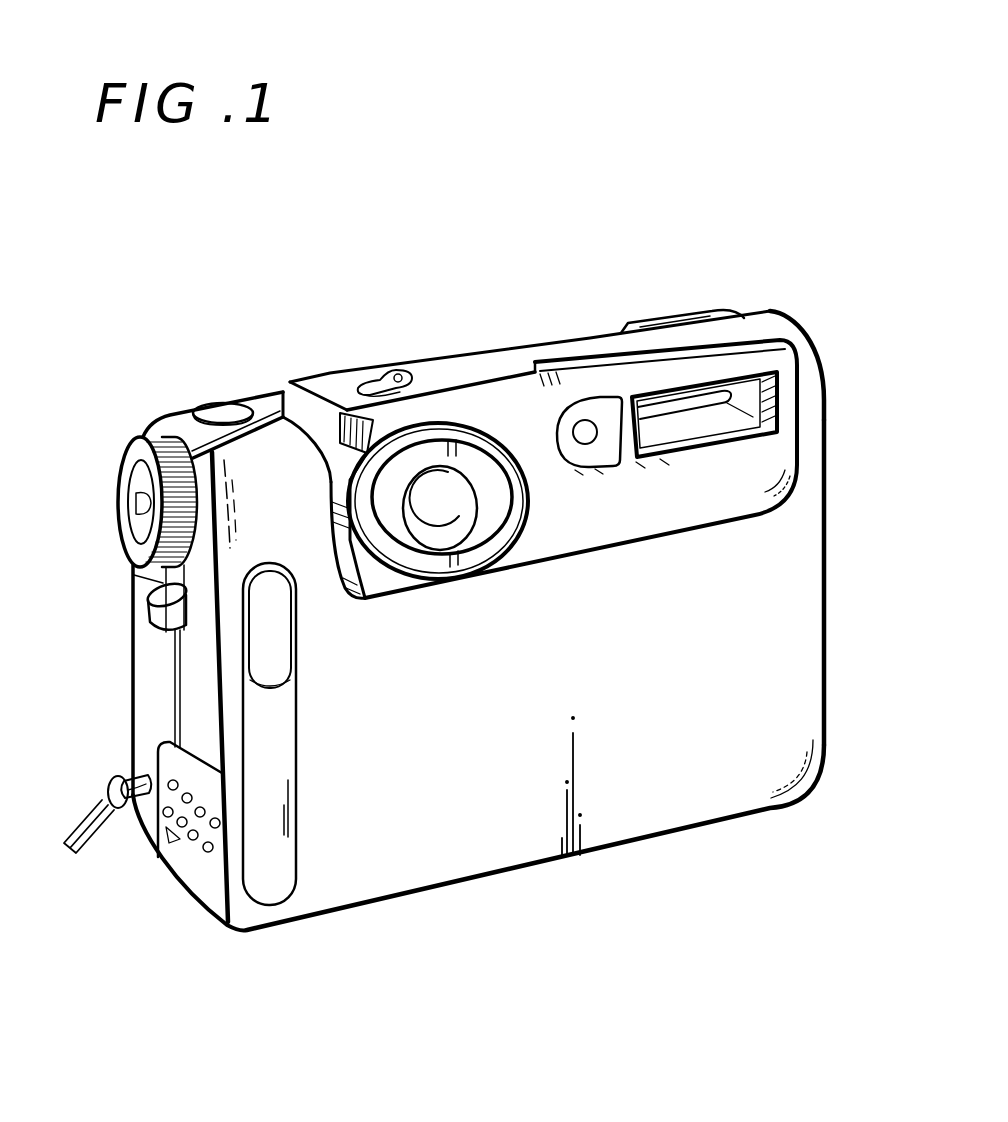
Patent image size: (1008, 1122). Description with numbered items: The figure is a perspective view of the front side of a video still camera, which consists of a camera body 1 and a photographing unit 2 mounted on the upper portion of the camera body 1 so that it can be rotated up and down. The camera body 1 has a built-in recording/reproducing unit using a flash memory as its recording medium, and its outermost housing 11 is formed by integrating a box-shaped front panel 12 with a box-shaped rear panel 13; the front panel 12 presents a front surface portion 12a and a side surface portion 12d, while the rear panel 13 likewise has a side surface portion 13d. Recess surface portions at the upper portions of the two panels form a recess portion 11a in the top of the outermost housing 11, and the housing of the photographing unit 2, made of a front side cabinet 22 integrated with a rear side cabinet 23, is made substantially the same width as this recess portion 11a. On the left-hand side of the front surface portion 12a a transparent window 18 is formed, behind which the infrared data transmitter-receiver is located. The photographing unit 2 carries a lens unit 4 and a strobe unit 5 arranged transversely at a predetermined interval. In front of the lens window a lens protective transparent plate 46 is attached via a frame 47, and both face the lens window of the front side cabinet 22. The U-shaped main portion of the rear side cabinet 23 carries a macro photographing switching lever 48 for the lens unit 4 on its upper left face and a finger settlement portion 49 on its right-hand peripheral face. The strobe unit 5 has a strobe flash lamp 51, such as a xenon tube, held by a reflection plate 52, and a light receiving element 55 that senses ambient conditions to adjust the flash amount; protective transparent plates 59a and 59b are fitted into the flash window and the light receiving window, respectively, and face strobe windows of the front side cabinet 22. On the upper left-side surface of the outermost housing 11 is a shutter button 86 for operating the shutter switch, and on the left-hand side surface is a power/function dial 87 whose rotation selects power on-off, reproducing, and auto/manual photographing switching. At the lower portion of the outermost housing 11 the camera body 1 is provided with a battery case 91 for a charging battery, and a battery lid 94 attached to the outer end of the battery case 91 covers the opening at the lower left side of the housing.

The camera body 1 is at (835, 560).
The photographing unit 2 is at (562, 322).
The lens unit 4 is at (472, 530).
The strobe unit 5 is at (716, 452).
The outermost housing 11 is at (827, 486).
The recess portion 11a is at (333, 385).
The front panel 12 is at (824, 665).
The front surface portion 12a is at (782, 744).
The side surface portion 12d is at (208, 673).
The rear panel 13 is at (132, 648).
The side surface portion 13d is at (153, 672).
The transparent window 18 is at (284, 617).
The front side cabinet 22 is at (545, 548).
The rear side cabinet 23 is at (528, 350).
The lens protective transparent plate 46 is at (438, 543).
The frame 47 is at (481, 424).
The macro photographing switching lever 48 is at (393, 368).
The finger settlement portion 49 is at (690, 320).
The strobe flash lamp 51 is at (723, 393).
The reflection plate 52 is at (747, 413).
The light receiving element 55 is at (594, 432).
The protective transparent plate 59a is at (661, 462).
The protective transparent plate 59b is at (588, 470).
The shutter button 86 is at (222, 404).
The power/function dial 87 is at (136, 460).
The battery case 91 is at (238, 930).
The battery lid 94 is at (187, 867).